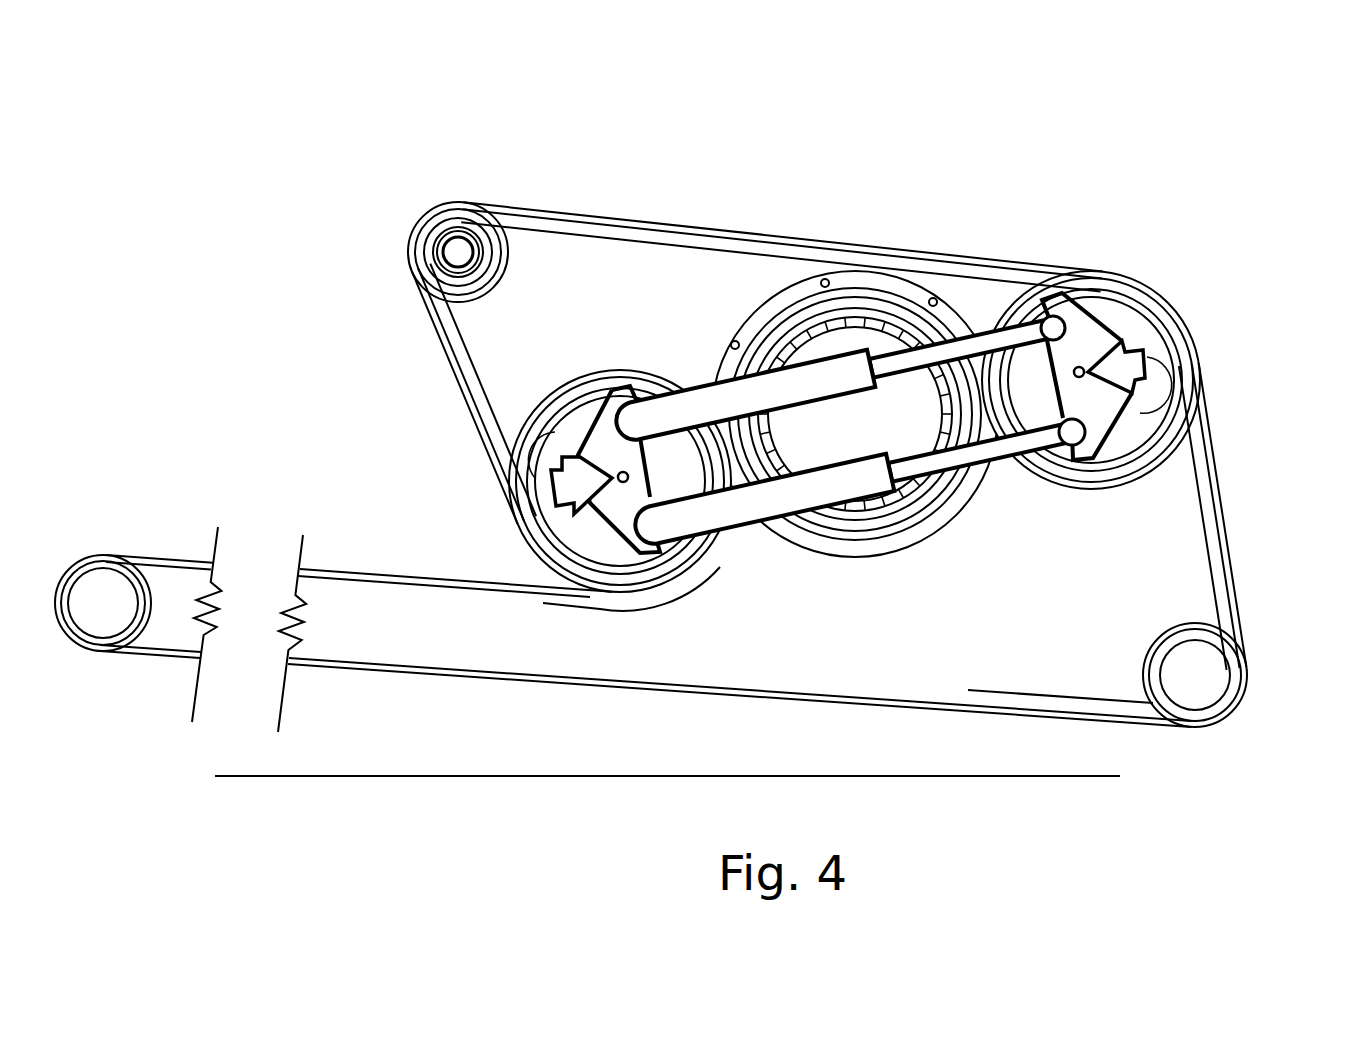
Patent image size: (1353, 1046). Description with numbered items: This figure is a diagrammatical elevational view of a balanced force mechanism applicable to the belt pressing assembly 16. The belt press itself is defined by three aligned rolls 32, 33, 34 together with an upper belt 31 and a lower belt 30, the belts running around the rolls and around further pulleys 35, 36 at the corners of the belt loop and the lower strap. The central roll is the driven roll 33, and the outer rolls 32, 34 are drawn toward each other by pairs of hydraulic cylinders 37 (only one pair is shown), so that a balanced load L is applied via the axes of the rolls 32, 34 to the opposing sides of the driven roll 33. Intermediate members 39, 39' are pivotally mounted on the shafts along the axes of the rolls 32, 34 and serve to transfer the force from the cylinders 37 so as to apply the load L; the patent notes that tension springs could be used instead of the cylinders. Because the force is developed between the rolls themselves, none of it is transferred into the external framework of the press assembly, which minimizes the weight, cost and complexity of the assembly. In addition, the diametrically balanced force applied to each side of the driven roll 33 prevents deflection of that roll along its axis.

The belt pressing assembly 16 is at (823, 217).
The lower belt 30 is at (468, 585).
The upper belt 31 is at (655, 220).
The roll 32 is at (605, 374).
The driven roll 33 is at (825, 527).
The roll 34 is at (1003, 313).
The idler pulley 35 is at (509, 263).
The bearing 36 is at (837, 348).
The hydraulic cylinder 37 is at (858, 503).
The intermediate member 39 is at (580, 452).
The intermediate member 39' is at (1142, 330).